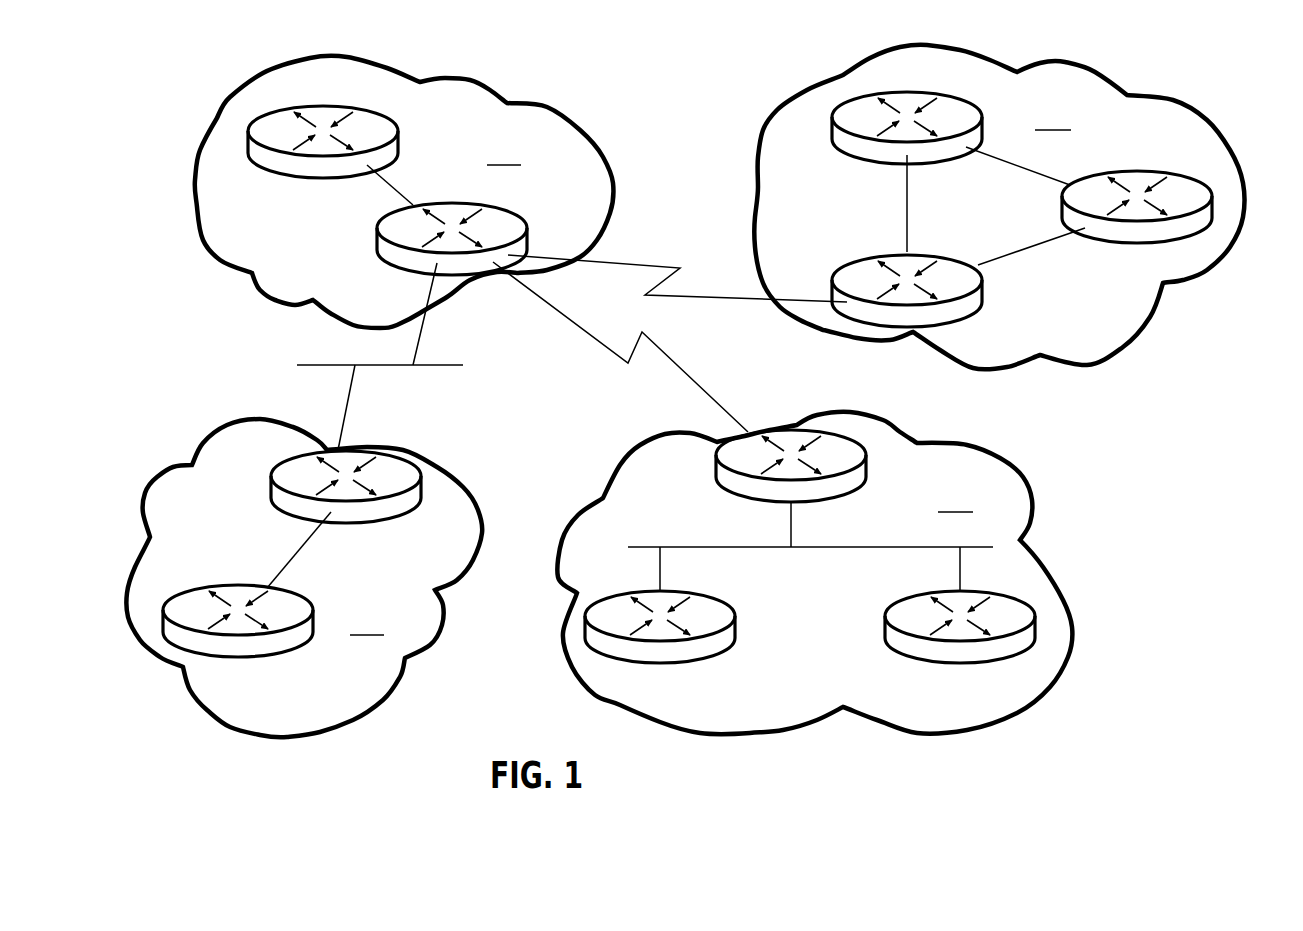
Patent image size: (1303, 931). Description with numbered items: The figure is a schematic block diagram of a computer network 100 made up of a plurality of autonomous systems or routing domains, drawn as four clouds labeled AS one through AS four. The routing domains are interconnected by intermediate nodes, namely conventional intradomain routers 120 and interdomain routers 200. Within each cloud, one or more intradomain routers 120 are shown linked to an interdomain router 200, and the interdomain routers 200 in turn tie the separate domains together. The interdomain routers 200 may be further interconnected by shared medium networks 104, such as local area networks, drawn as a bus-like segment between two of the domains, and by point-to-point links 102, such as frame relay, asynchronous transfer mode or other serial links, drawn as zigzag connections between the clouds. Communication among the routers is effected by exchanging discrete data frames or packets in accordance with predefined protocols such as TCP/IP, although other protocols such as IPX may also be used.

The computer network 100 is at (705, 391).
The point-to-point links 102 is at (748, 302).
The shared medium network 104 is at (437, 368).
The intradomain router 120 is at (321, 104).
The interdomain router 200 is at (512, 214).